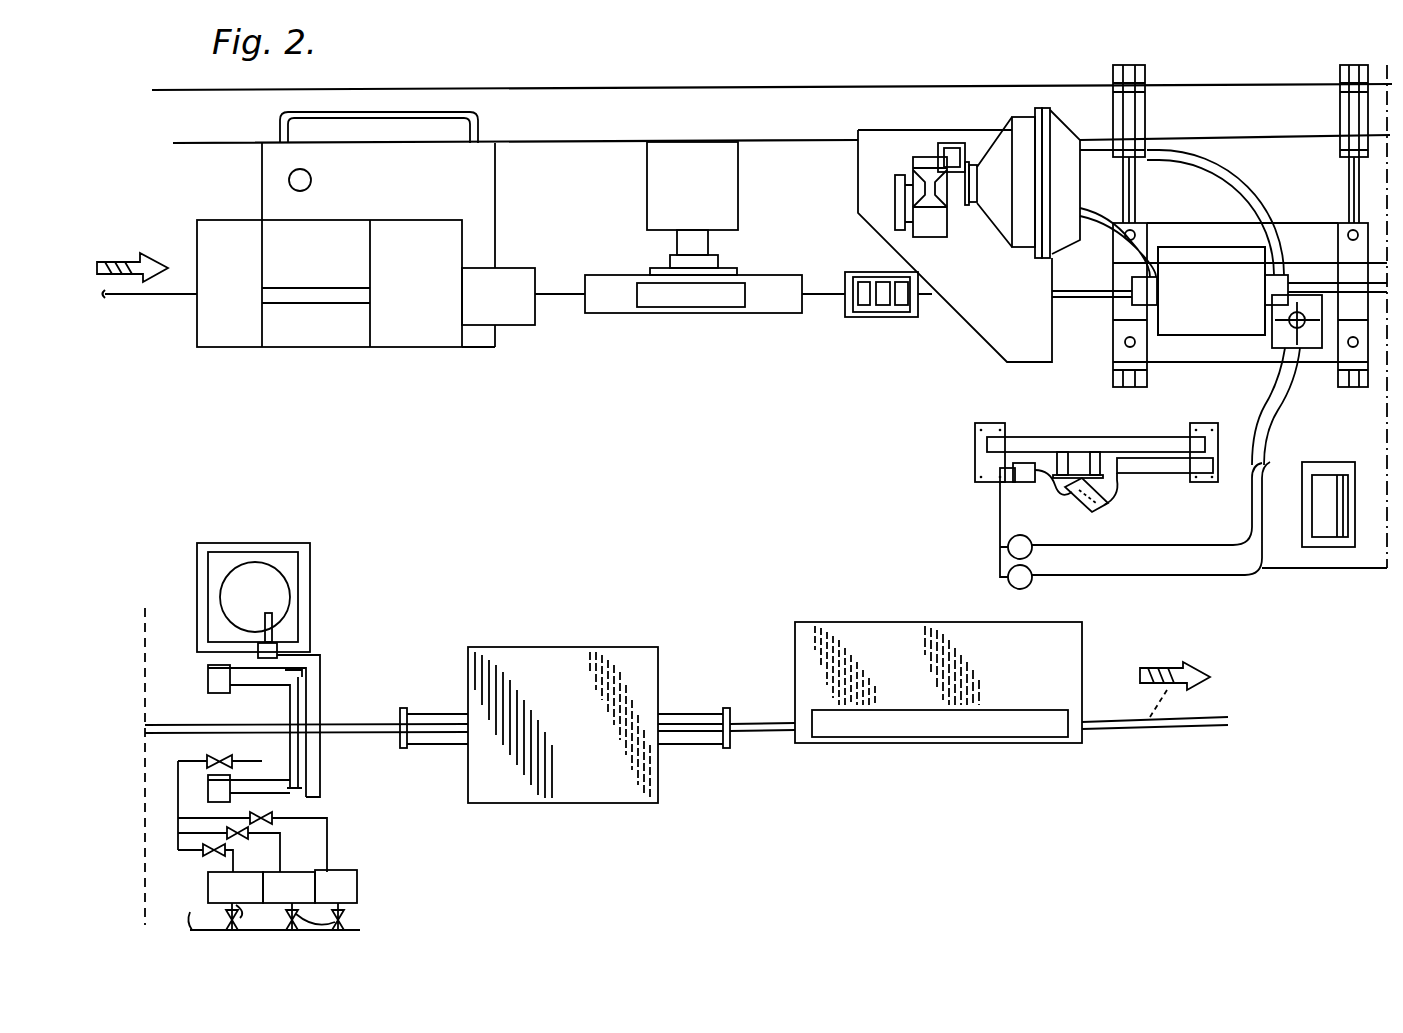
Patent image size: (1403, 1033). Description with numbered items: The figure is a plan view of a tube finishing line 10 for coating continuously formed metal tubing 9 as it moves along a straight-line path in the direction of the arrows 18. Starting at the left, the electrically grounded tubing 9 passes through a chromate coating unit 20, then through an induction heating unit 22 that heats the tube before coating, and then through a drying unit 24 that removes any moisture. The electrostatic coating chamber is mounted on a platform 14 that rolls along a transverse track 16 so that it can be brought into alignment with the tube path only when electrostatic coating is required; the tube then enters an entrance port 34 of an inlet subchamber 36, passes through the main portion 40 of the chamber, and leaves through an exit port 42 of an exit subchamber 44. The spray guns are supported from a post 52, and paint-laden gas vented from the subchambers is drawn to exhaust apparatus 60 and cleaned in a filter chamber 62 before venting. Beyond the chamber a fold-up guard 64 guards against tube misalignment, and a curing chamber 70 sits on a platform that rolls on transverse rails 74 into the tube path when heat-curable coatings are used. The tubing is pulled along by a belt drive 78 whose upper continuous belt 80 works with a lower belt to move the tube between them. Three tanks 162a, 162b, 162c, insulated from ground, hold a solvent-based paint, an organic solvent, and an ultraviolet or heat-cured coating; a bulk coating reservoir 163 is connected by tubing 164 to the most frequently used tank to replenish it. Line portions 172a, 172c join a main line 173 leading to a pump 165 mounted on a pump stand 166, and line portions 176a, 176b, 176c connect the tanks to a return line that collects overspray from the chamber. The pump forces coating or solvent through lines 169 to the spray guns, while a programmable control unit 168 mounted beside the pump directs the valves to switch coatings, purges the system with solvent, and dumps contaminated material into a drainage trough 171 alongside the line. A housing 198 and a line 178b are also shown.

The tube finishing line 10 is at (409, 66).
The drainage trough 171 is at (677, 108).
The chromate coating unit 20 is at (412, 346).
The arrows 18 is at (128, 258).
The tubing 9 is at (565, 297).
The induction heating unit 22 is at (770, 297).
The drying unit 24 is at (867, 318).
The housing 198 is at (1040, 348).
The exhaust apparatus 60 is at (983, 141).
The filter chamber 62 is at (1022, 125).
The transverse track 16 is at (1350, 182).
The platform 14 is at (1188, 236).
The exit port 42 is at (1291, 292).
The inlet subchamber 36 is at (1158, 297).
The main portion 40 is at (1197, 320).
The entrance port 34 is at (1128, 300).
The exit subchamber 44 is at (1280, 286).
The post 52 is at (1300, 340).
The lines 169 is at (1290, 406).
The pump stand 166 is at (987, 458).
The programmable control unit 168 is at (1023, 483).
The pump 165 is at (1087, 513).
The main line 173 is at (1280, 570).
The bulk coating reservoir 163 is at (307, 589).
The fold-up guard 64 is at (300, 697).
The transverse rails 74 is at (178, 776).
The curing chamber 70 is at (563, 652).
The belt drive 78 is at (887, 595).
The upper continuous belt 80 is at (937, 723).
The tubing 164 is at (330, 855).
The line portion 176a is at (330, 857).
The line portion 176b is at (283, 857).
The line portion 176c is at (235, 867).
The tank 162a is at (357, 873).
The tank 162b is at (294, 901).
The tank 162c is at (207, 883).
The line portion 172a is at (343, 913).
The line portion 172c is at (244, 903).
The line 178b is at (343, 923).